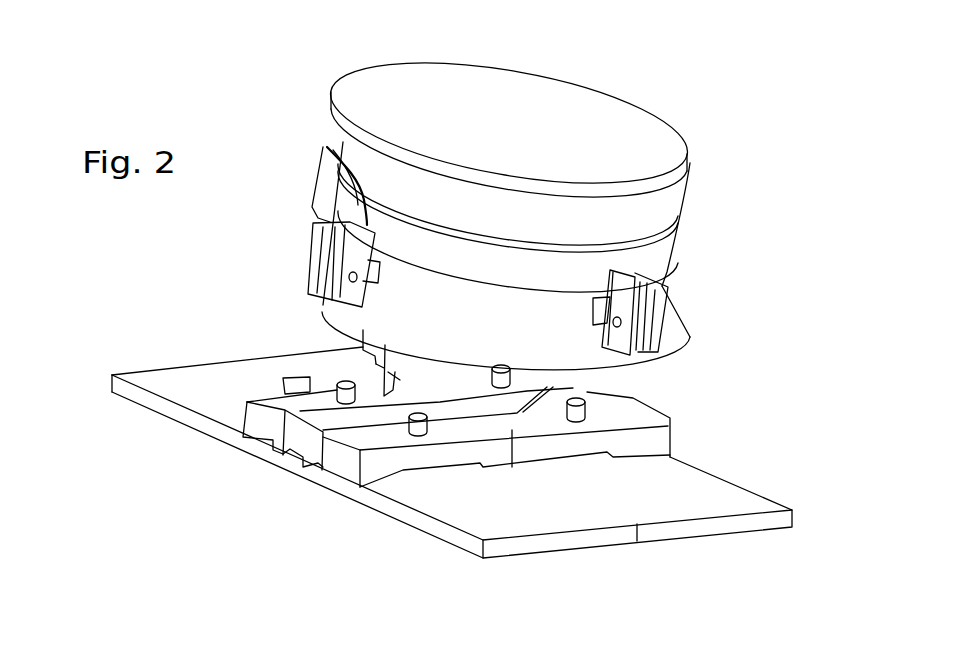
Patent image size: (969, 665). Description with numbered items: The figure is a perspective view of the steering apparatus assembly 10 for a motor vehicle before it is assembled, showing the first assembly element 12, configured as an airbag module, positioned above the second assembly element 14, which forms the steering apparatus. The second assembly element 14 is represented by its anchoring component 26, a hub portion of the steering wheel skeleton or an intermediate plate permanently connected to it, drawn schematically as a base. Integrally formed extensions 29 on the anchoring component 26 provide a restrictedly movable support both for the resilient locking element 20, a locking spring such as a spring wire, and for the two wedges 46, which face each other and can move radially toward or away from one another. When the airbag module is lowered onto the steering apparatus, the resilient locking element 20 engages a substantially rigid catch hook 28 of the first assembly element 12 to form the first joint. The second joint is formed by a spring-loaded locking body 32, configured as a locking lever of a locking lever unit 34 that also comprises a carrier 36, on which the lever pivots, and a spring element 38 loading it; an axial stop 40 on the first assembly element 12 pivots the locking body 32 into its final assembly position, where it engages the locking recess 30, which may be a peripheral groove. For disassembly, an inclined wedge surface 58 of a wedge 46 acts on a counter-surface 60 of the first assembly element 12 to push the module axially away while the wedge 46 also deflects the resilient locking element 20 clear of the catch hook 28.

The steering apparatus assembly 10 is at (260, 533).
The first assembly element 12 is at (674, 99).
The second assembly element 14 is at (237, 250).
The resilient locking element 20 is at (313, 385).
The anchoring component 26 is at (660, 503).
The catch hook 28 is at (393, 390).
The extensions 29 is at (287, 388).
The locking recess 30 is at (647, 212).
The locking body 32 is at (586, 340).
The locking lever unit 34 is at (297, 247).
The carrier 36 is at (628, 302).
The spring element 38 is at (645, 333).
The axial stop 40 is at (327, 147).
The wedges 46 is at (608, 385).
The inclined wedge surface 58 is at (528, 382).
The counter-surface 60 is at (404, 378).